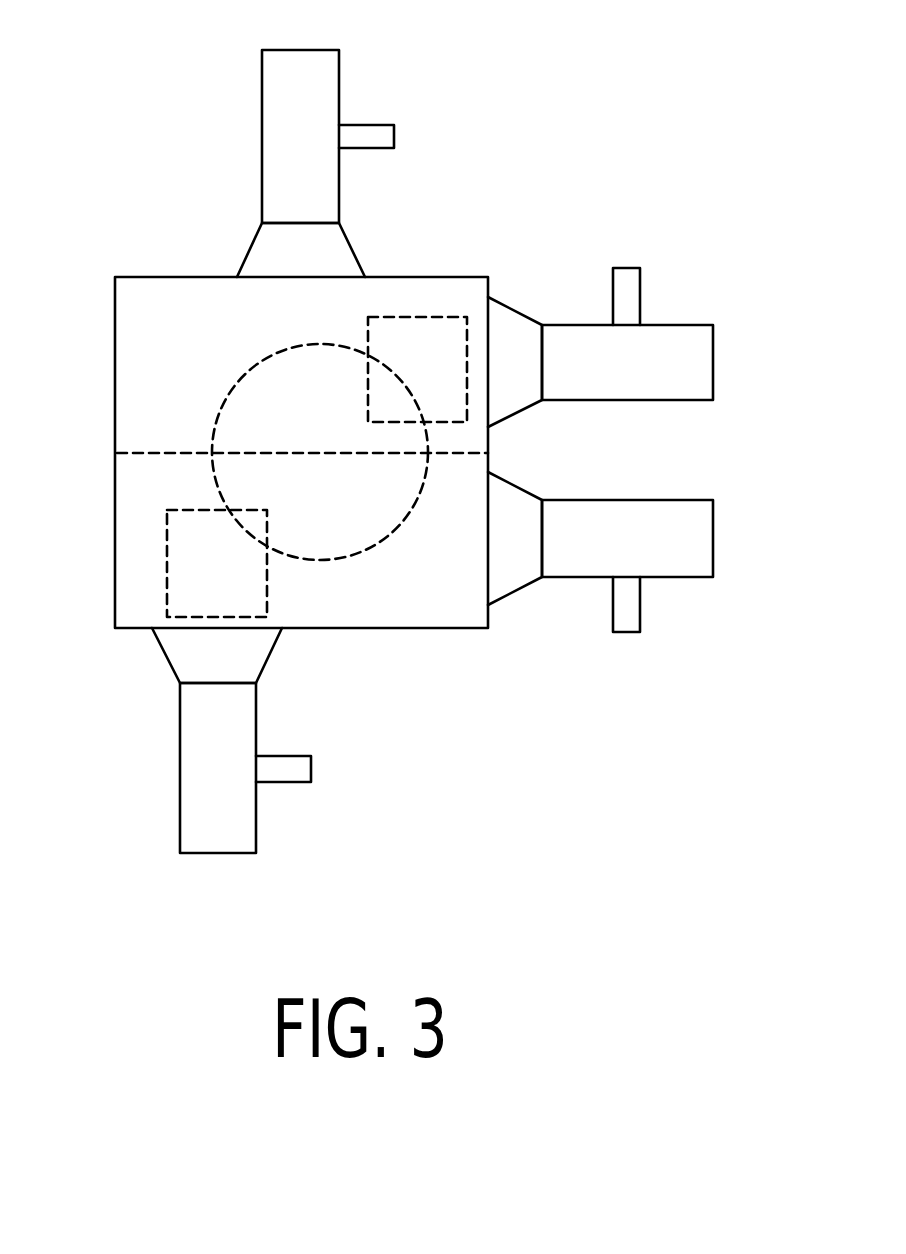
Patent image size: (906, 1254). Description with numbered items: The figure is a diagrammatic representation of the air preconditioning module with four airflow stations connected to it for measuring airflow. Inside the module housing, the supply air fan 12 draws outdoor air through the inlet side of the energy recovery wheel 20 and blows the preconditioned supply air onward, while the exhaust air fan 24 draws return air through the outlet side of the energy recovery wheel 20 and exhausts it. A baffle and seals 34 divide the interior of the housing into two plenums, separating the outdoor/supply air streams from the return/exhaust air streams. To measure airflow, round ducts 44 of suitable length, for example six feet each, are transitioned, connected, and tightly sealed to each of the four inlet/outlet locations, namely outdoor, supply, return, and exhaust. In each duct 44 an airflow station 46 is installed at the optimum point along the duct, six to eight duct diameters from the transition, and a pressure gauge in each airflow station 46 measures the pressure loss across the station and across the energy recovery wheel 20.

The supply air fan 12 is at (440, 315).
The energy recovery wheel 20 is at (217, 425).
The exhaust air fan 24 is at (163, 557).
The baffle and seals 34 is at (160, 455).
The round duct 44 is at (262, 83).
The airflow station 46 is at (368, 125).